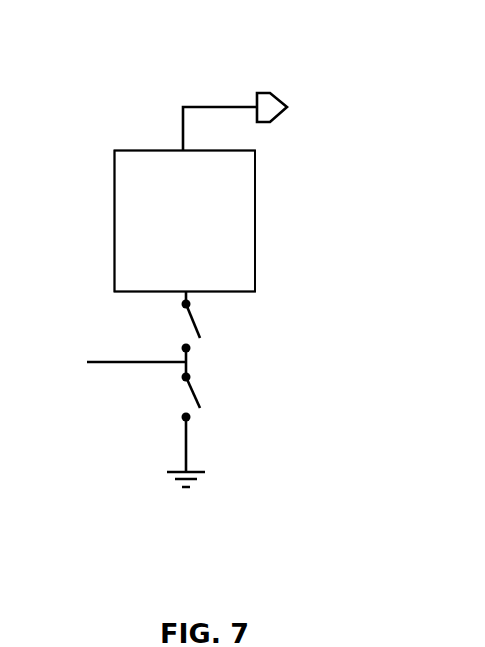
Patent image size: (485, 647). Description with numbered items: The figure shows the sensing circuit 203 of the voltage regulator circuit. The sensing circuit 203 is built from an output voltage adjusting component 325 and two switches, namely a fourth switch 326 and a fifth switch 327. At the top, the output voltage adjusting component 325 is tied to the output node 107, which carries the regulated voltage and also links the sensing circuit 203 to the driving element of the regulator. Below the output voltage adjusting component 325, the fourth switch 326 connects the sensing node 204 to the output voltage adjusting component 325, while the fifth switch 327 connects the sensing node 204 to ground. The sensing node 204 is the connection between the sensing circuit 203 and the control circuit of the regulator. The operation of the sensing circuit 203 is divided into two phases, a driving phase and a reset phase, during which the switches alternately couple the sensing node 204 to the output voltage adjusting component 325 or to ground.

The sensing circuit 203 is at (157, 81).
The output node 107 is at (212, 107).
The output voltage adjusting component 325 is at (255, 192).
The fourth switch 326 is at (200, 337).
The fifth switch 327 is at (200, 407).
The sensing node 204 is at (115, 360).